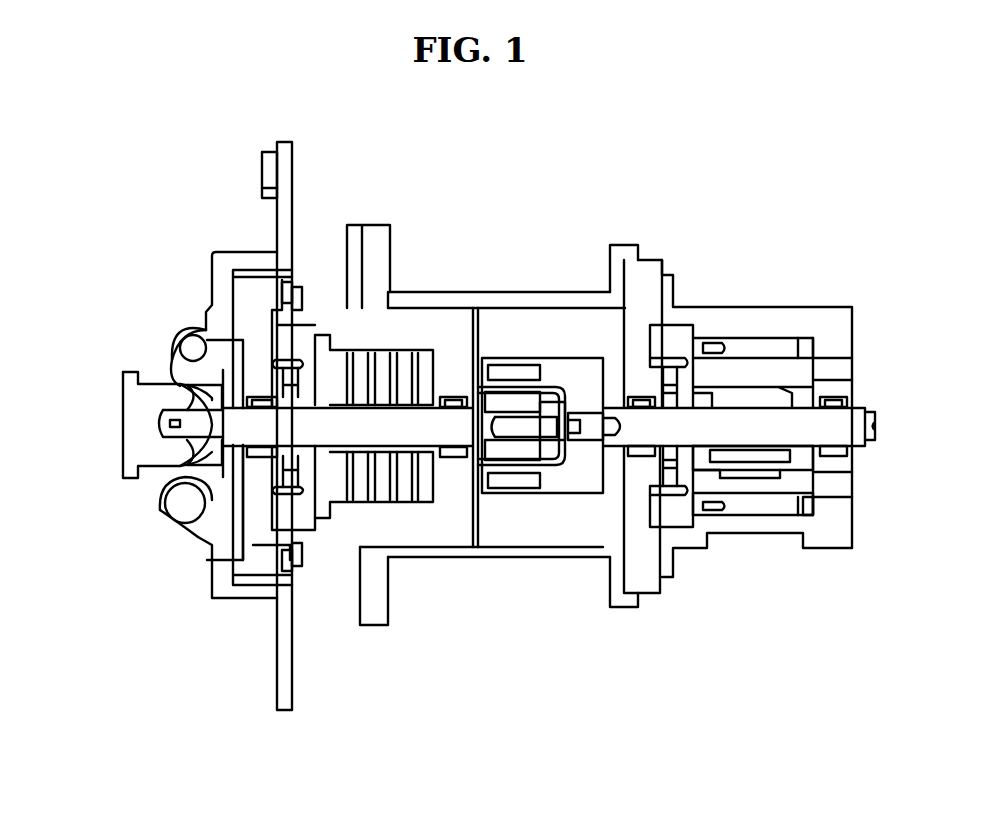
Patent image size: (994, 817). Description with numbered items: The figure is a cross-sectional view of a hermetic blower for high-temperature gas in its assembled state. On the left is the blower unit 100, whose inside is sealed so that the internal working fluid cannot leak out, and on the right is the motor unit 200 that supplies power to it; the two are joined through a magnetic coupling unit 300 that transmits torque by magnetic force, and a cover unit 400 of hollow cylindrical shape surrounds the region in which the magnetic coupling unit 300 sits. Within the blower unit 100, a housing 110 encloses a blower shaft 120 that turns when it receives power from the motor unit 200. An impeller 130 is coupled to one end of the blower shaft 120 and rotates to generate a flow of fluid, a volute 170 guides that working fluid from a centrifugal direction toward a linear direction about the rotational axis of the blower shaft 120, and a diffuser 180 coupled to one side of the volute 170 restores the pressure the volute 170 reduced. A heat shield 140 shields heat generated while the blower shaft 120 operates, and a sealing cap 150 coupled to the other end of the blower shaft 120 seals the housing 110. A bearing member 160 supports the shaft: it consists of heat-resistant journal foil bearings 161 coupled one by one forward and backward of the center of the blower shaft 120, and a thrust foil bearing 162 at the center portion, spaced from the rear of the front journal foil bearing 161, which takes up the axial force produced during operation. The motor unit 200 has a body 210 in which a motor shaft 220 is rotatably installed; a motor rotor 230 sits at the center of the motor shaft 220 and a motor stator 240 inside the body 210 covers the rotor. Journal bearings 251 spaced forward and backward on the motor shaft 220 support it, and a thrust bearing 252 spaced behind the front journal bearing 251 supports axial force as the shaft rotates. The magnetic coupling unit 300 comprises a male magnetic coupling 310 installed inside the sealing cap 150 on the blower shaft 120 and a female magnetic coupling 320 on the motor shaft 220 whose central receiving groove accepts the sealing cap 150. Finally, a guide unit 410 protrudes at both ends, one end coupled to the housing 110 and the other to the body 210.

The blower unit 100 is at (240, 250).
The housing 110 is at (408, 335).
The blower shaft 120 is at (362, 425).
The impeller 130 is at (186, 338).
The heat shield 140 is at (243, 305).
The sealing cap 150 is at (548, 392).
The bearing member 160 is at (333, 519).
The journal foil bearing 161 is at (258, 555).
The thrust foil bearing 162 is at (300, 545).
The volute 170 is at (175, 455).
The diffuser 180 is at (180, 505).
The motor unit 200 is at (742, 304).
The body 210 is at (801, 335).
The motor shaft 220 is at (815, 498).
The motor rotor 230 is at (752, 465).
The motor stator 240 is at (732, 520).
The journal bearing 251 is at (641, 395).
The thrust bearing 252 is at (677, 325).
The magnetic coupling unit 300 is at (532, 514).
The male magnetic coupling 310 is at (508, 445).
The female magnetic coupling 320 is at (520, 478).
The cover unit 400 is at (572, 292).
The guide unit 410 is at (373, 226).